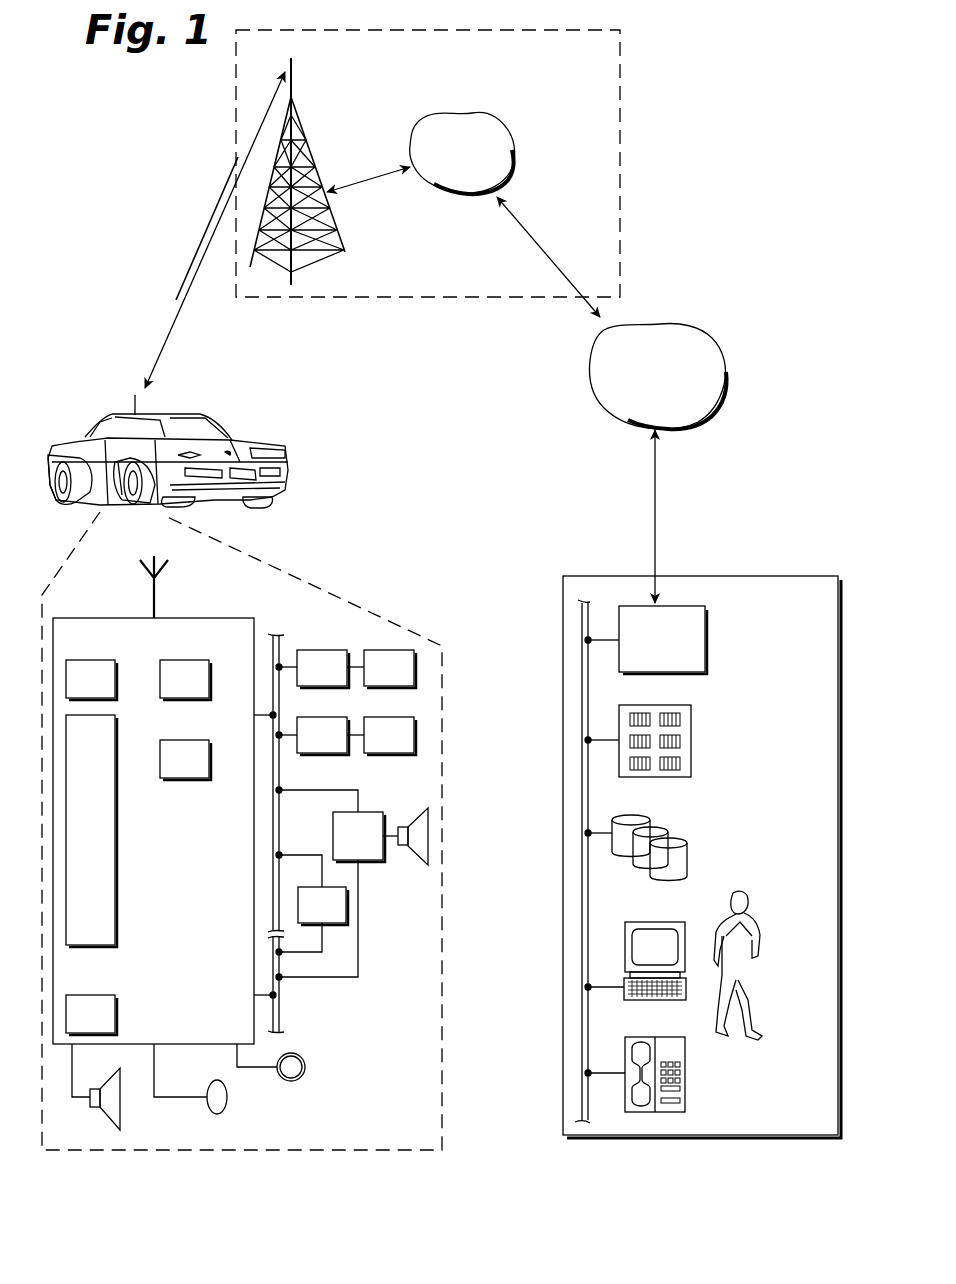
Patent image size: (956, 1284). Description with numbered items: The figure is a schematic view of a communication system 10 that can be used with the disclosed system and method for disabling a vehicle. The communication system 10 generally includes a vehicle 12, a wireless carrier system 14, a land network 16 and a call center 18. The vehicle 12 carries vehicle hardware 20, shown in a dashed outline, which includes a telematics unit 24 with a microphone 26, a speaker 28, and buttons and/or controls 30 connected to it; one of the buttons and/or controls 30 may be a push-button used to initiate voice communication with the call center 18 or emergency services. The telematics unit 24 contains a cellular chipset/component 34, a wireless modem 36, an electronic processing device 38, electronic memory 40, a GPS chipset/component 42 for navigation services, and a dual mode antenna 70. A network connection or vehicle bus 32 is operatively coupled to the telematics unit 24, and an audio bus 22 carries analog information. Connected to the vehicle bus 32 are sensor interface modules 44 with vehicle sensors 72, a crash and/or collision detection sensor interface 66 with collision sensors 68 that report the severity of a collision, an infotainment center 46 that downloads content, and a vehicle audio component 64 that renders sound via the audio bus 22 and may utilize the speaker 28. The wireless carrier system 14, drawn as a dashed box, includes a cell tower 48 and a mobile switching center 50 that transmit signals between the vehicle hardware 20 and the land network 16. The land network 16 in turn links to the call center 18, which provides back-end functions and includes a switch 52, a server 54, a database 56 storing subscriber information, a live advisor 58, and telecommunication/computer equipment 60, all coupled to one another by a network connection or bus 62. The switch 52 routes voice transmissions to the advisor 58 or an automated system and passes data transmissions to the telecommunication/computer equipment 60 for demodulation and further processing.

The communication system 10 is at (151, 95).
The vehicle 12 is at (110, 425).
The wireless carrier system 14 is at (624, 89).
The land network 16 is at (712, 408).
The call center 18 is at (765, 577).
The vehicle hardware 20 is at (316, 592).
The audio bus 22 is at (281, 1001).
The telematics unit 24 is at (108, 618).
The microphone 26 is at (227, 1091).
The speaker 28 is at (122, 1094).
The buttons and/or controls 30 is at (303, 1061).
The vehicle bus 32 is at (280, 696).
The cellular chipset/component 34 is at (112, 698).
The wireless modem 36 is at (188, 698).
The electronic processing device 38 is at (116, 800).
The electronic memory 40 is at (116, 1014).
The GPS chipset/component 42 is at (188, 778).
The sensor interface modules 44 is at (321, 753).
The infotainment center 46 is at (298, 907).
The cell tower 48 is at (300, 142).
The mobile switching center 50 is at (486, 116).
The switch 52 is at (707, 642).
The server 54 is at (693, 726).
The database 56 is at (655, 822).
The advisor 58 is at (748, 902).
The telecommunication/computer equipment 60 is at (687, 1074).
The network connection or bus 62 is at (590, 905).
The vehicle audio component 64 is at (333, 830).
The crash and/or collision detection sensor interface 66 is at (323, 650).
The collision sensors 68 is at (385, 686).
The dual mode antenna 70 is at (165, 572).
The vehicle sensors 72 is at (385, 753).